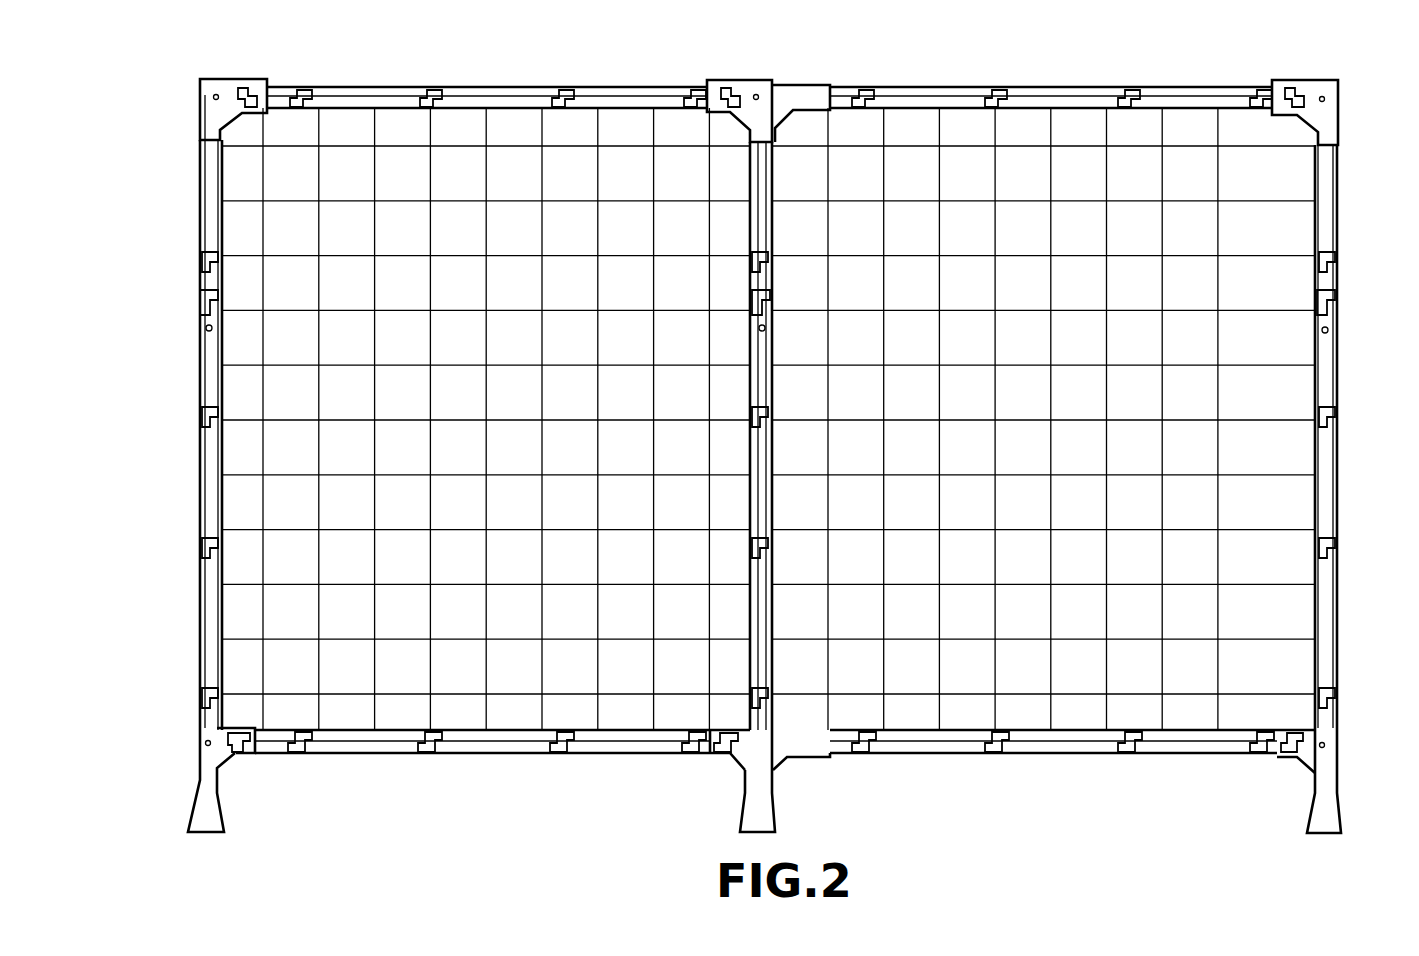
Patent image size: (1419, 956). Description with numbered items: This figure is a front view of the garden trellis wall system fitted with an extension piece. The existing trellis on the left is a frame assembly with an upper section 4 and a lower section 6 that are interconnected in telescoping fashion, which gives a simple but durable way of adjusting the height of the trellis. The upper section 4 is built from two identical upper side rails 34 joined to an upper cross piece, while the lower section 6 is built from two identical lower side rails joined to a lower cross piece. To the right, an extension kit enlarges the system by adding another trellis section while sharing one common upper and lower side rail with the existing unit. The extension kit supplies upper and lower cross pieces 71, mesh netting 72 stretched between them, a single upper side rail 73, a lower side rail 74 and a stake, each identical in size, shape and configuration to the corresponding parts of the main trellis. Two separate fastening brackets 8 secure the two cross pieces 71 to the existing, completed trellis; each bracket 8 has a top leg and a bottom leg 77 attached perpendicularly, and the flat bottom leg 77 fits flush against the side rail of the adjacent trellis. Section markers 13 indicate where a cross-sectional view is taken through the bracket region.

The upper section 4 is at (190, 266).
The lower section 6 is at (186, 601).
The separate fastening bracket 8 is at (217, 84).
The section line 13 is at (760, 698).
The upper side rail 34 is at (208, 230).
The upper and lower cross pieces 71 is at (1026, 88).
The mesh netting 72 is at (1283, 346).
The single upper side rail 73 is at (1325, 169).
The lower side rail 74 is at (1330, 590).
The bottom leg 77 is at (773, 788).